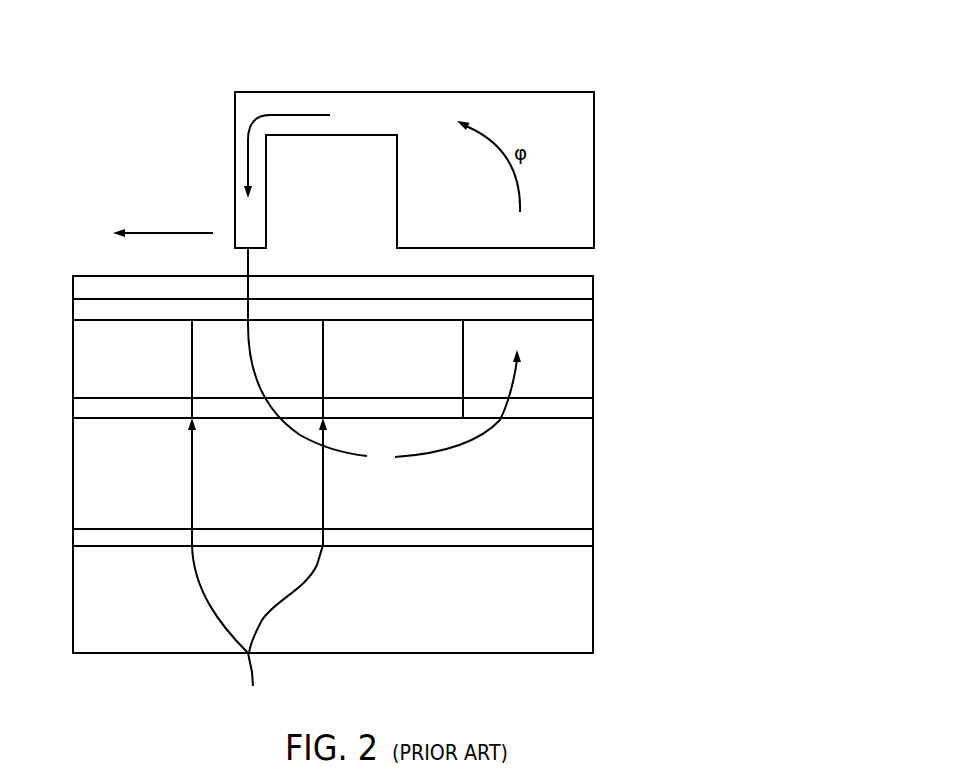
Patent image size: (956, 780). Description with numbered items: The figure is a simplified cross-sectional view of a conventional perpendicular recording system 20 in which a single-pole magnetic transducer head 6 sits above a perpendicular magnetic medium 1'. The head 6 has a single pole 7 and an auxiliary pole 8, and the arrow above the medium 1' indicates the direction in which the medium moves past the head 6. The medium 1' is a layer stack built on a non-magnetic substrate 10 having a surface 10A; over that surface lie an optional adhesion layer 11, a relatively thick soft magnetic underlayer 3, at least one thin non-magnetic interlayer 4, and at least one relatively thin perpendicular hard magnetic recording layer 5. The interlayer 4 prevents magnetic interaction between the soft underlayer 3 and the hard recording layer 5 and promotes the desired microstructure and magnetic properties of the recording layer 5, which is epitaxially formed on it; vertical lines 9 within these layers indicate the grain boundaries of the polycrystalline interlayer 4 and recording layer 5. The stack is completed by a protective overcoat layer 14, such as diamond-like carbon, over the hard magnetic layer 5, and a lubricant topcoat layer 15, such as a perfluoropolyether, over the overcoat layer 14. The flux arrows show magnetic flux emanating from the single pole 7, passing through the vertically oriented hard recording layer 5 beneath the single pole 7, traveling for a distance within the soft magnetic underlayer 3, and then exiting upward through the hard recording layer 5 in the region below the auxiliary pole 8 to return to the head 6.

The perpendicular recording system 20 is at (431, 136).
The single-pole magnetic transducer head 6 is at (301, 87).
The single pole 7 is at (212, 163).
The auxiliary pole 8 is at (622, 147).
The magnetic medium 1' is at (313, 448).
The lubricant topcoat layer 15 is at (608, 285).
The protective overcoat layer 14 is at (608, 310).
The perpendicular hard magnetic recording layer 5 is at (608, 349).
The non-magnetic interlayer 4 is at (611, 410).
The soft magnetic underlayer 3 is at (608, 463).
The adhesion layer 11 is at (608, 537).
The substrate surface 10A is at (593, 546).
The non-magnetic substrate 10 is at (608, 610).
The vertical lines 9 is at (354, 482).